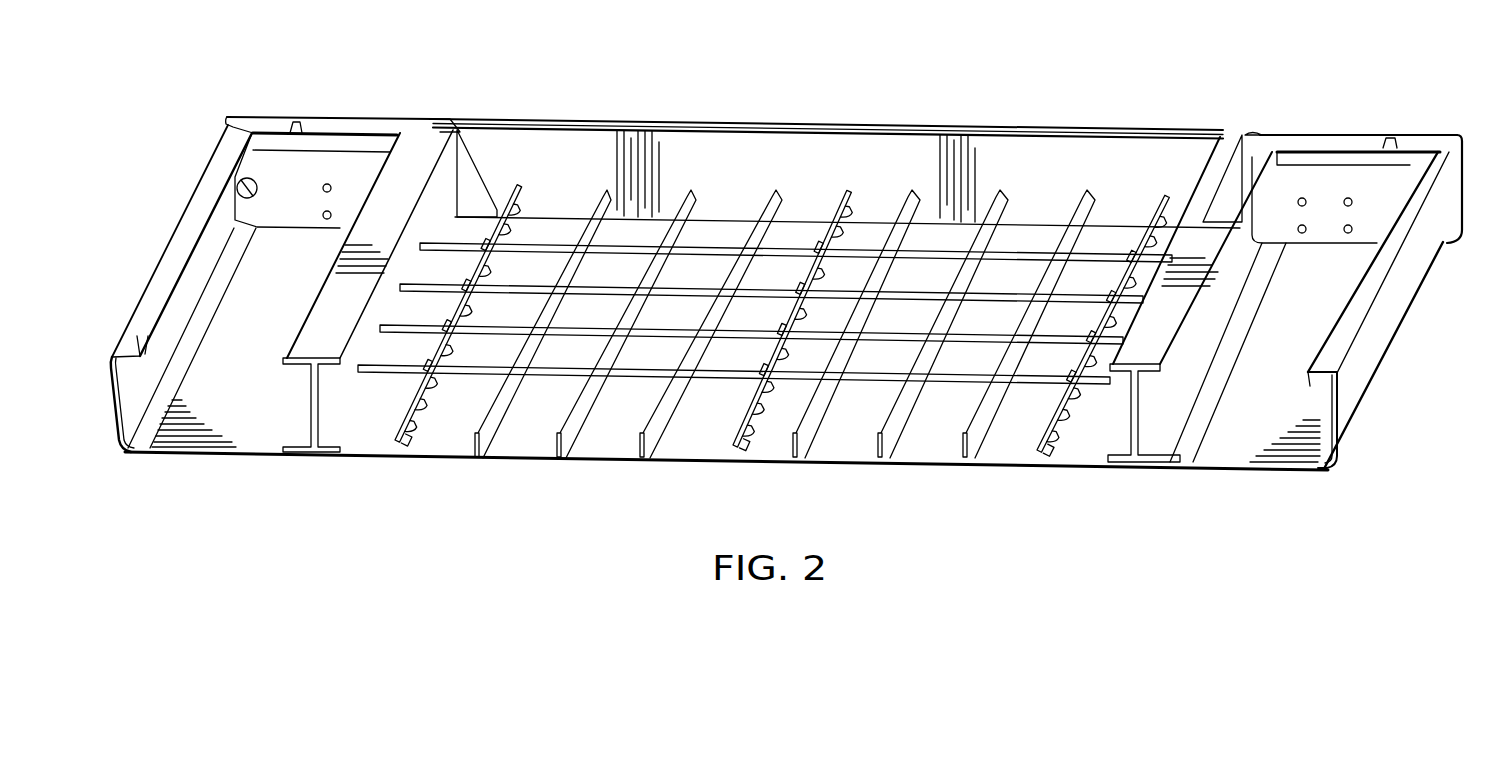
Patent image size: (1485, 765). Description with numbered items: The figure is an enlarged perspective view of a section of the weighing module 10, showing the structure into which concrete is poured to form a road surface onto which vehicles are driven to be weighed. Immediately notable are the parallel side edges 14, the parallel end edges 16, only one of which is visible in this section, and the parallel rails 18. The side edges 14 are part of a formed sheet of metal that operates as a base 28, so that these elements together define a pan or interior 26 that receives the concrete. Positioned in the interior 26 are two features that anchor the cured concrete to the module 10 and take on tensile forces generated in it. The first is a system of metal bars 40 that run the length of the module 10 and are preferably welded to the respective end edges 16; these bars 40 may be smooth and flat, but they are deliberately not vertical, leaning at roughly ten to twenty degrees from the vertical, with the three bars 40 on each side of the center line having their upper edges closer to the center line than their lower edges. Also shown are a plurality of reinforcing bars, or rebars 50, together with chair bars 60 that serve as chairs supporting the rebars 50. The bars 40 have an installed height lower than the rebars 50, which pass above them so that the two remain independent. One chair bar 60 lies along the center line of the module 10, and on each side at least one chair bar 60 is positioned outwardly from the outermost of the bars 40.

The module 10 is at (880, 97).
The side edges 14 is at (167, 246).
The end edges 16 is at (1073, 132).
The rails 18 is at (412, 143).
The interior 26 is at (720, 220).
The base 28 is at (366, 440).
The bars 40 is at (476, 453).
The rebars 50 is at (540, 248).
The chair bars 60 is at (388, 437).